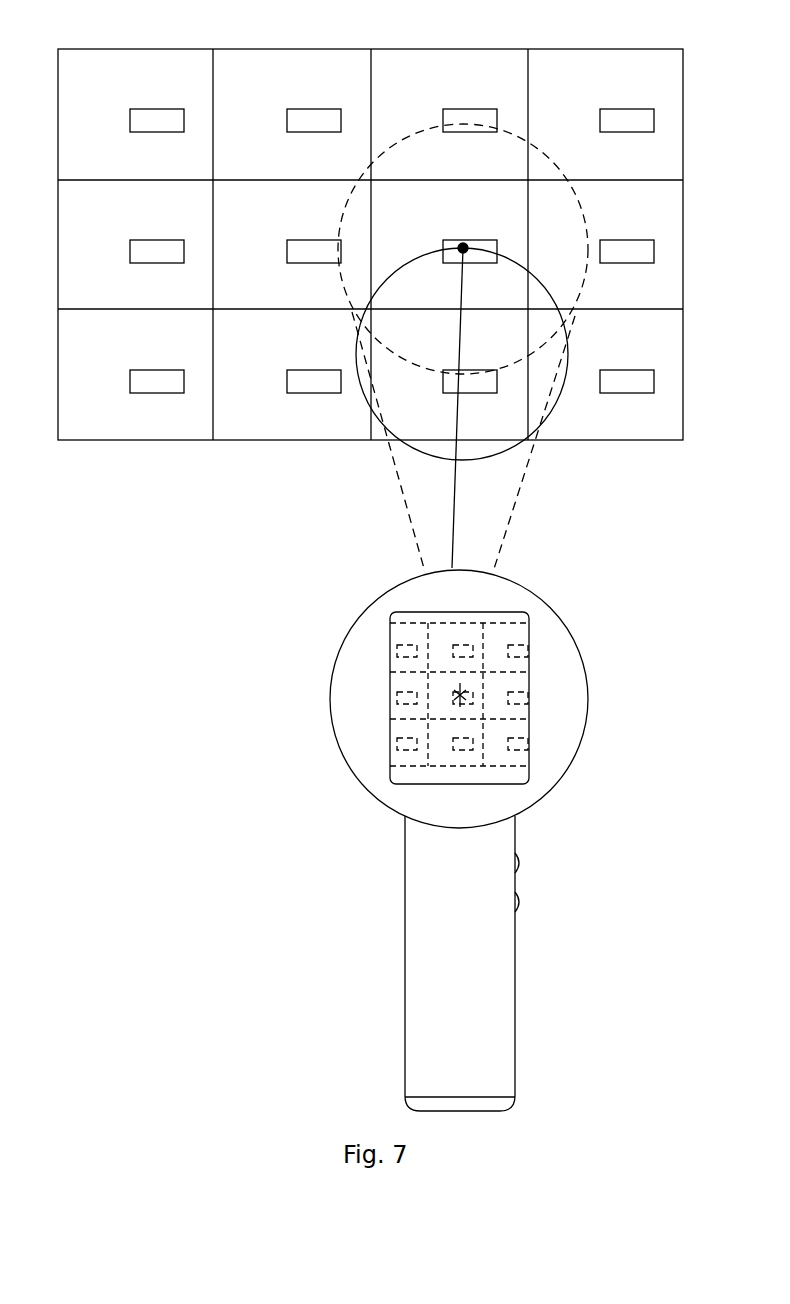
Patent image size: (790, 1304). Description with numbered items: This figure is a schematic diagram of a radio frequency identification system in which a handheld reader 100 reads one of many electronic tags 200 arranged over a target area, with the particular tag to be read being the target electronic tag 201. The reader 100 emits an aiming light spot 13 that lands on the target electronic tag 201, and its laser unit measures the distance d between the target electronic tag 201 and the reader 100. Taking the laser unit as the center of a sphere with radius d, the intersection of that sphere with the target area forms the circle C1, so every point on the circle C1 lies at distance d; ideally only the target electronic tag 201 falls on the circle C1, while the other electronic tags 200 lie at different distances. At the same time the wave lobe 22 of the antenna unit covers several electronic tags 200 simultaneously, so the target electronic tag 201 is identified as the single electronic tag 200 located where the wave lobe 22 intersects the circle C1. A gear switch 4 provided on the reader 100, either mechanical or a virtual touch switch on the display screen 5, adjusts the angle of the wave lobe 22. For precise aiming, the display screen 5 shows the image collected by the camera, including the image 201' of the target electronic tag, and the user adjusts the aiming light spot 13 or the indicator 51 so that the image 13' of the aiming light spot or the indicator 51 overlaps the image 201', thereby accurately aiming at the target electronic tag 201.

The electronic tag 200 is at (288, 240).
The target electronic tag 201 is at (505, 134).
The aiming light spot 13 is at (426, 129).
The wave lobe 22 is at (568, 172).
The circle C1 is at (560, 397).
The distance d is at (456, 508).
The reader 100 is at (362, 625).
The display screen 5 is at (392, 695).
The indicator 51 is at (460, 688).
The image of the target electronic tag 201' is at (364, 715).
The image of the aiming light spot 13' is at (551, 718).
The gear switch 4 is at (521, 863).